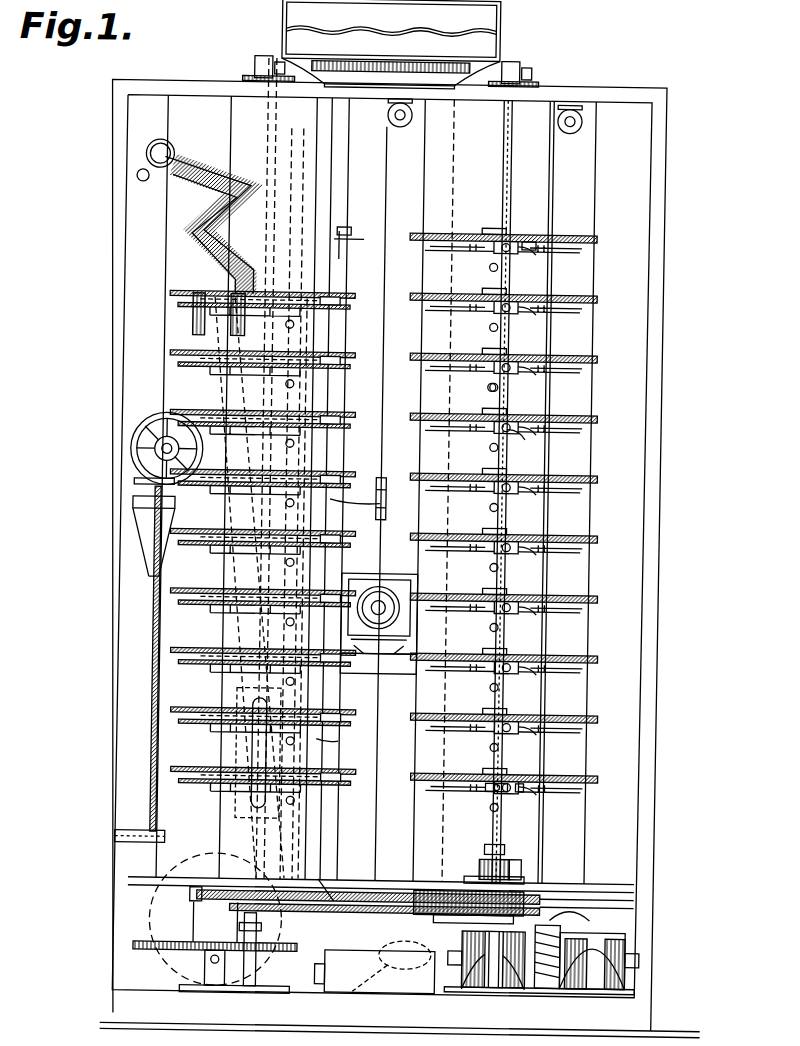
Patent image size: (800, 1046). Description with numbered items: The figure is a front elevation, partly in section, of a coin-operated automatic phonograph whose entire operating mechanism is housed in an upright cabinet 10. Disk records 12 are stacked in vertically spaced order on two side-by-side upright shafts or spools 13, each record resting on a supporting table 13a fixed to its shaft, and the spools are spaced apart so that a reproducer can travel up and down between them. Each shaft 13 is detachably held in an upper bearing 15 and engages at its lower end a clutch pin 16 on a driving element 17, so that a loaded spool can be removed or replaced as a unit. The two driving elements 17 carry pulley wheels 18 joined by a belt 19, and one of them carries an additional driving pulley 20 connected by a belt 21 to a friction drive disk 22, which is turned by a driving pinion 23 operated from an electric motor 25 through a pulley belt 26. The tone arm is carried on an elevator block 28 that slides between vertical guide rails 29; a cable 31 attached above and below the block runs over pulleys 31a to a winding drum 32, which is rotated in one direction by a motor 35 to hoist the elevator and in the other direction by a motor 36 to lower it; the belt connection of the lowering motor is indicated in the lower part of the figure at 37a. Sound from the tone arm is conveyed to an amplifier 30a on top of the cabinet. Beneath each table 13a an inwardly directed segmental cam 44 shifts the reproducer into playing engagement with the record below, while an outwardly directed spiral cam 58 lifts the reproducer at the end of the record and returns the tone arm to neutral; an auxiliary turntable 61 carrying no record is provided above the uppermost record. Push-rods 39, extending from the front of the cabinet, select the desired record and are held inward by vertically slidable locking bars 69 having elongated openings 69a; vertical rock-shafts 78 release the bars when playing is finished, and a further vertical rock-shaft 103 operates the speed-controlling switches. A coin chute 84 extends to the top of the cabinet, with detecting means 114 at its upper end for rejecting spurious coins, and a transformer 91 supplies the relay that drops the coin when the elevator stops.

The upright cabinet 10 is at (648, 484).
The records 12 is at (578, 650).
The upright shafts or spools 13 is at (506, 818).
The supporting tables 13a is at (490, 786).
The upper bearings 15 is at (514, 66).
The clutch pin 16 is at (505, 856).
The driving element 17 is at (490, 848).
The pulley wheel 18 is at (290, 914).
The belt 19 is at (336, 904).
The additional driving pulley 20 is at (544, 896).
The belt 21 is at (365, 878).
The friction drive disk 22 is at (160, 936).
The driving pinion 23 is at (216, 922).
The electric motor 25 is at (158, 418).
The pulley belt 26 is at (154, 672).
The elevator block 28 is at (379, 624).
The guides or rails 29 is at (355, 470).
The amplifier 30a is at (390, 45).
The cable 31 is at (380, 243).
The pulleys 31a is at (394, 128).
The winding drum 32 is at (596, 918).
The motor 35 is at (599, 961).
The motor 36 is at (532, 985).
The cam 37a is at (394, 955).
The push-rods 39 is at (486, 386).
The segmental cam 44 is at (386, 500).
The spiral cam 58 is at (514, 436).
The auxiliary turntable 61 is at (345, 228).
The vertically slidable bar 69 is at (278, 582).
The elongated openings 69a is at (355, 509).
The vertical rock-shafts 78 is at (338, 748).
The coin chute 84 is at (270, 818).
The transformer 91 is at (374, 972).
The vertical rock-shaft 103 is at (544, 816).
The detecting means 114 is at (165, 222).